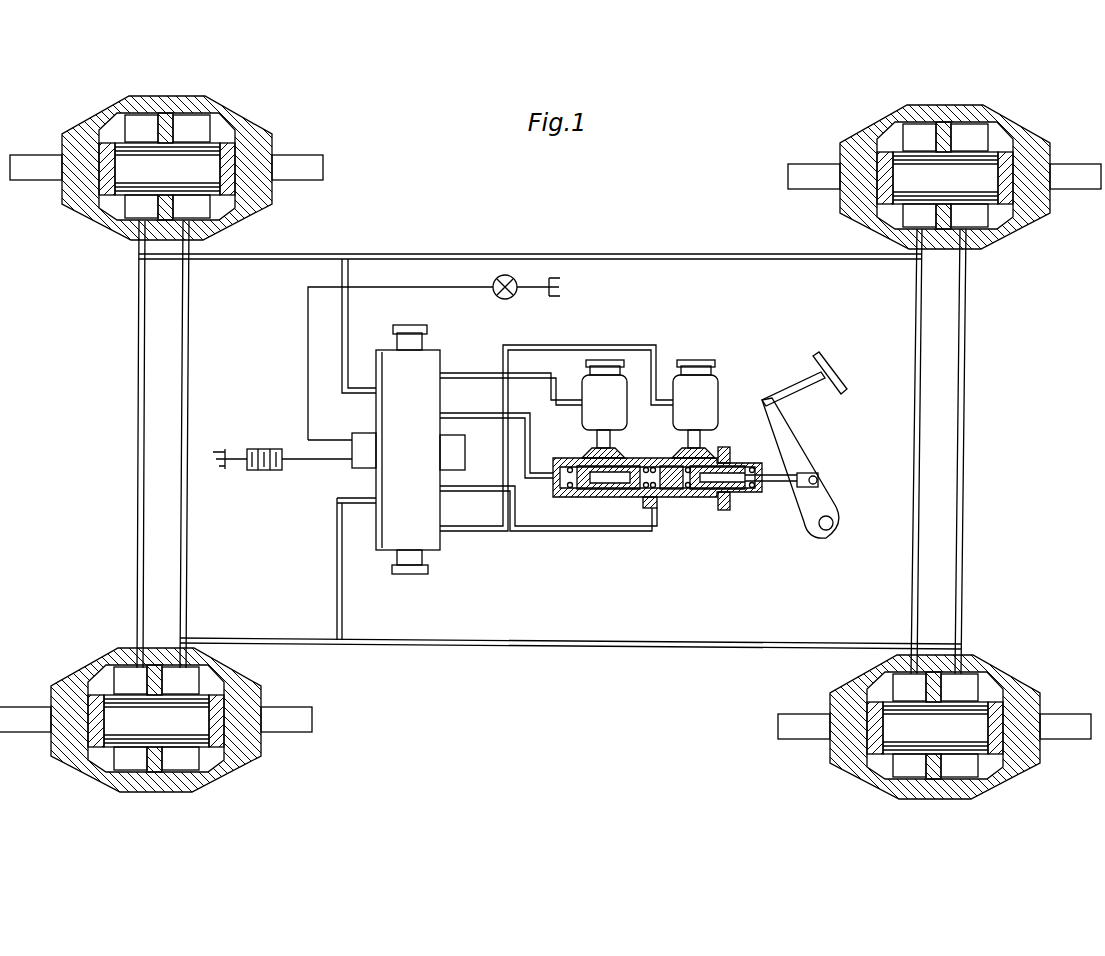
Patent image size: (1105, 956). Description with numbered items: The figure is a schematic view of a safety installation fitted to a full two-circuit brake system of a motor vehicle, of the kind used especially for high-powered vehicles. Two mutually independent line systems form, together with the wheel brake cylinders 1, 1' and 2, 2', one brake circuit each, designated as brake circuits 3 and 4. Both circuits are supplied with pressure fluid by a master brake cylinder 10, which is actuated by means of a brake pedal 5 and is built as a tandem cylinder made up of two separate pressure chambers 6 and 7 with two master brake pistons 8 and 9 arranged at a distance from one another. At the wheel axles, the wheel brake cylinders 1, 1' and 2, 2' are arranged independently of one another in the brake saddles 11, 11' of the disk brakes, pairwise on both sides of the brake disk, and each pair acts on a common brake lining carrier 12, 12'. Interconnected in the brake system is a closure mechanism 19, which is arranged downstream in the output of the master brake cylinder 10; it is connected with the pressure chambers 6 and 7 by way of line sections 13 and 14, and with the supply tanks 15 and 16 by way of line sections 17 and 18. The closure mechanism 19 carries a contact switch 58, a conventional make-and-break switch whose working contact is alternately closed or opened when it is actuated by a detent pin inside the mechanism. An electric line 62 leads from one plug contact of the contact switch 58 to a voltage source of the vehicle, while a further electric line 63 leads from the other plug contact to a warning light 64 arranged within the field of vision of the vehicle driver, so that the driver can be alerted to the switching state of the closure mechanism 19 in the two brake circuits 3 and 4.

The wheel brake cylinder 1 is at (102, 447).
The wheel brake cylinder 2 is at (222, 448).
The brake saddle 11 is at (161, 444).
The brake lining carrier 12 is at (195, 445).
The wheel brake cylinder 1' is at (882, 451).
The wheel brake cylinder 2' is at (1004, 458).
The brake saddle 11' is at (939, 452).
The brake lining carrier 12' is at (974, 453).
The brake circuit 3 is at (508, 248).
The brake circuit 4 is at (563, 656).
The brake pedal 5 is at (826, 360).
The pressure chamber 6 is at (560, 496).
The pressure chamber 7 is at (648, 480).
The master brake piston 8 is at (605, 479).
The master brake piston 9 is at (699, 482).
The master brake cylinder 10 is at (655, 456).
The line section 13 is at (528, 439).
The line section 14 is at (563, 532).
The supply tank 15 is at (600, 418).
The supply tank 16 is at (690, 418).
The line section 17 is at (475, 372).
The line section 18 is at (595, 344).
The closure mechanism 19 is at (400, 459).
The contact switch 58 is at (348, 430).
The electric line 62 is at (313, 462).
The electric line 63 is at (308, 327).
The warning light 64 is at (492, 283).